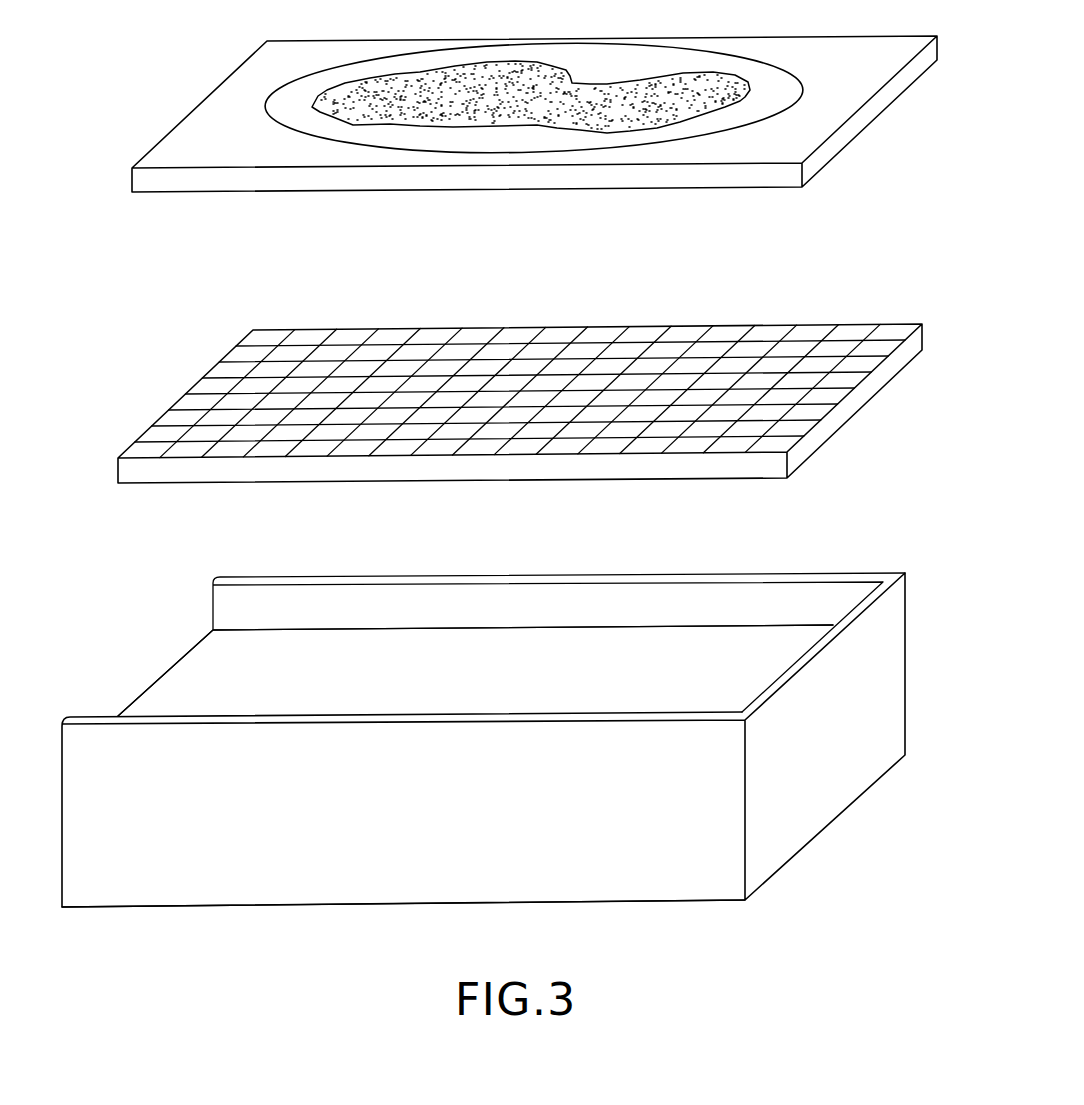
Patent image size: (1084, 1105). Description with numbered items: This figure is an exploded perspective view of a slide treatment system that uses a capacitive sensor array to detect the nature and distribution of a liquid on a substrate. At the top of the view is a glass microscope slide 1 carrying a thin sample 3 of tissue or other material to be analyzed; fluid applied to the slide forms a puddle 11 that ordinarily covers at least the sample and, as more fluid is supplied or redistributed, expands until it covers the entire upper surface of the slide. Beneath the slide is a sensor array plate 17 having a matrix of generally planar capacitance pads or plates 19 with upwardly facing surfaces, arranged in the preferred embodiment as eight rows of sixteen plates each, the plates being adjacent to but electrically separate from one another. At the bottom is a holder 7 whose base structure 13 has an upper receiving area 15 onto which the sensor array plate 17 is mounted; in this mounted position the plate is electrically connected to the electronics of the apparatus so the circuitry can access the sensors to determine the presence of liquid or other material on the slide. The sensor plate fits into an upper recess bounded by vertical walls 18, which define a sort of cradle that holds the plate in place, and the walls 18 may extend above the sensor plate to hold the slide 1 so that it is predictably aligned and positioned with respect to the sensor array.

The glass microscope slide 1 is at (808, 120).
The sample 3 is at (550, 80).
The puddle 11 is at (655, 67).
The sensor array plate 17 is at (625, 468).
The capacitance plates 19 is at (265, 338).
The base structure 13 is at (442, 862).
The vertical walls 18 is at (85, 733).
The upper receiving area 15 is at (725, 654).
The holder 7 is at (235, 870).